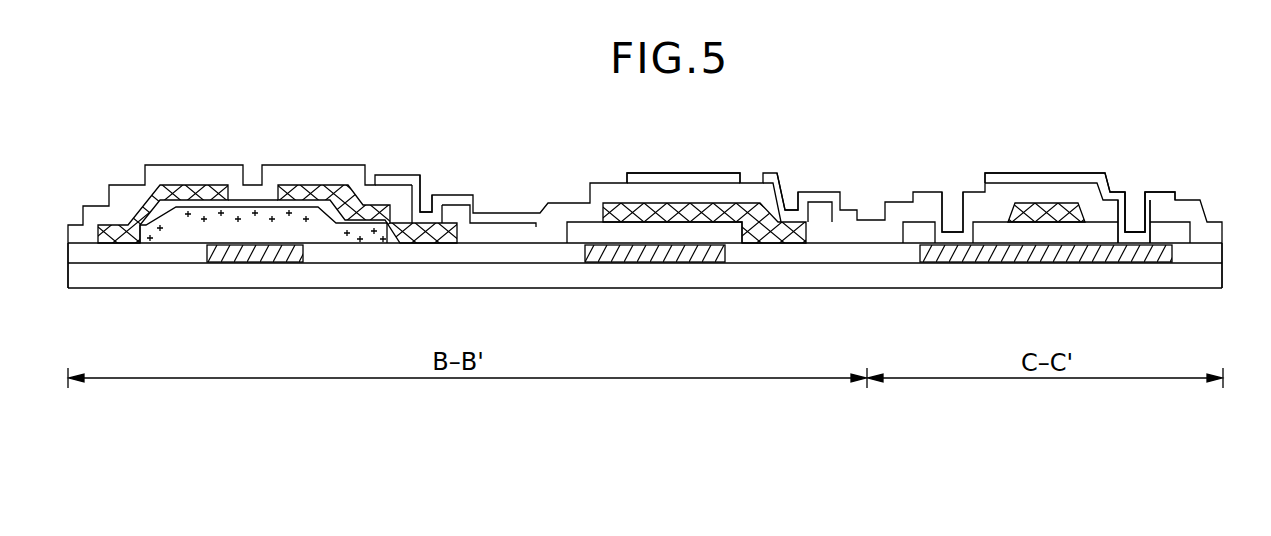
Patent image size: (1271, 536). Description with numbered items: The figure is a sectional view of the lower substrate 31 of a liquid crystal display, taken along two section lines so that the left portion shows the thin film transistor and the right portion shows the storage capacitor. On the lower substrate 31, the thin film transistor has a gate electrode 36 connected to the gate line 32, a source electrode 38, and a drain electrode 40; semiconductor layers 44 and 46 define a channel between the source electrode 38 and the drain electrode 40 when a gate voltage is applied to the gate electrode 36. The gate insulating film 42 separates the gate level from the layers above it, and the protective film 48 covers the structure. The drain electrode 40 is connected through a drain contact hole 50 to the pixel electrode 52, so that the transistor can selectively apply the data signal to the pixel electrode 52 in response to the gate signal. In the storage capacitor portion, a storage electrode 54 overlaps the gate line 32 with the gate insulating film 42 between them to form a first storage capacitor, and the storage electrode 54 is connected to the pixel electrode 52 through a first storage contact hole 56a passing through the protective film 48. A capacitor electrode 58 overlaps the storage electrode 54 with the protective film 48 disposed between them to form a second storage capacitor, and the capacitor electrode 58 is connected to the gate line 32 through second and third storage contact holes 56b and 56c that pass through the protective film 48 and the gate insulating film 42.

The lower substrate 31 is at (1222, 277).
The gate line 32 is at (683, 257).
The gate electrode 36 is at (247, 257).
The source electrode 38 is at (133, 210).
The drain electrode 40 is at (303, 187).
The gate insulating film 42 is at (1222, 255).
The semiconductor layer 44 is at (169, 245).
The semiconductor layer 46 is at (349, 226).
The protective film 48 is at (1222, 232).
The drain contact hole 50 is at (428, 193).
The pixel electrode 52 is at (506, 218).
The storage electrode 54 is at (722, 213).
The first storage contact hole 56a is at (795, 207).
The second storage contact hole 56b is at (953, 206).
The third storage contact hole 56c is at (1138, 203).
The capacitor electrode 58 is at (652, 173).